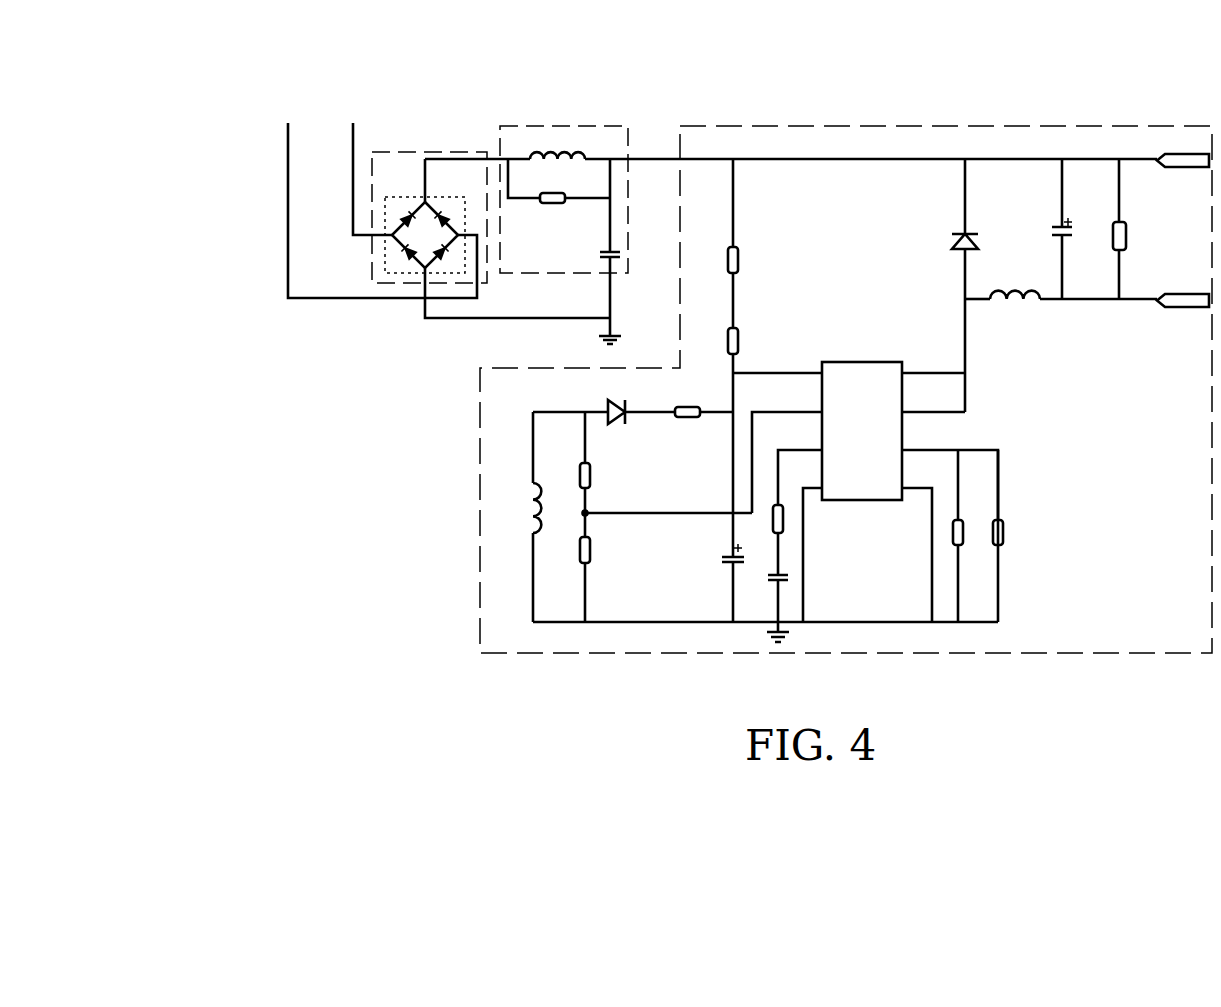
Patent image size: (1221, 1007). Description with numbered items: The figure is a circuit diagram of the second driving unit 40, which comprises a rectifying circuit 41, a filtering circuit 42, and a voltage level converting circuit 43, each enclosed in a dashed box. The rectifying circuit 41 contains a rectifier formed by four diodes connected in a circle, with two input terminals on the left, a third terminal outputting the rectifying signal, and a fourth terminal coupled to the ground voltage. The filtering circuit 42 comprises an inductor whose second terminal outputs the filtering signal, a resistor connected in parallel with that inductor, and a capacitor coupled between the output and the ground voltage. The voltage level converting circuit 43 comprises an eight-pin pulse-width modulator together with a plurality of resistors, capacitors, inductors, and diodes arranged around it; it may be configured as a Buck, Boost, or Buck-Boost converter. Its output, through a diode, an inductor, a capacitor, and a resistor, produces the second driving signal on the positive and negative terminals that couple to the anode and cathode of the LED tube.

The second driving unit 40 is at (253, 121).
The rectifying circuit 41 is at (455, 151).
The filtering circuit 42 is at (602, 126).
The voltage level converting circuit 43 is at (1187, 126).